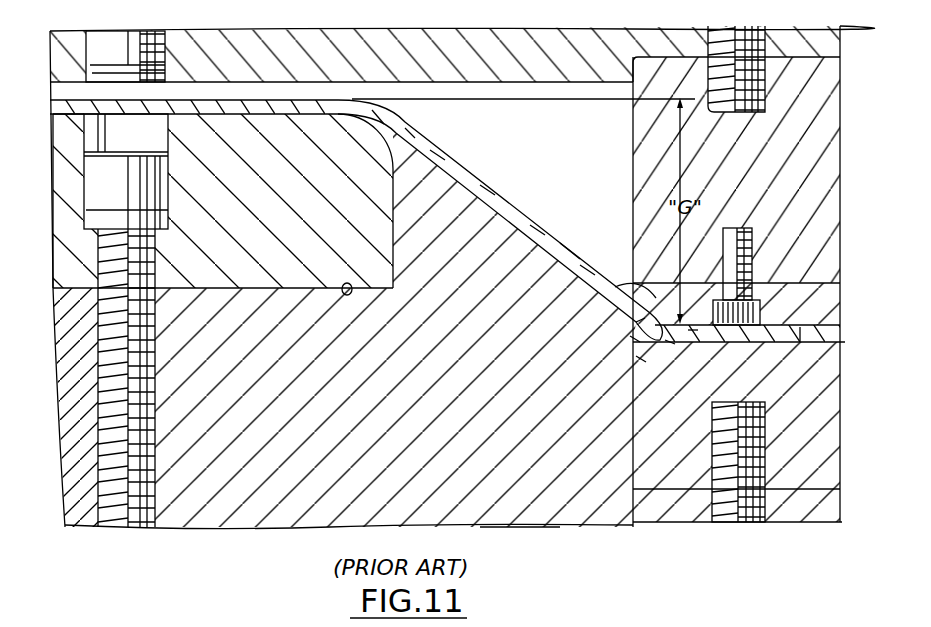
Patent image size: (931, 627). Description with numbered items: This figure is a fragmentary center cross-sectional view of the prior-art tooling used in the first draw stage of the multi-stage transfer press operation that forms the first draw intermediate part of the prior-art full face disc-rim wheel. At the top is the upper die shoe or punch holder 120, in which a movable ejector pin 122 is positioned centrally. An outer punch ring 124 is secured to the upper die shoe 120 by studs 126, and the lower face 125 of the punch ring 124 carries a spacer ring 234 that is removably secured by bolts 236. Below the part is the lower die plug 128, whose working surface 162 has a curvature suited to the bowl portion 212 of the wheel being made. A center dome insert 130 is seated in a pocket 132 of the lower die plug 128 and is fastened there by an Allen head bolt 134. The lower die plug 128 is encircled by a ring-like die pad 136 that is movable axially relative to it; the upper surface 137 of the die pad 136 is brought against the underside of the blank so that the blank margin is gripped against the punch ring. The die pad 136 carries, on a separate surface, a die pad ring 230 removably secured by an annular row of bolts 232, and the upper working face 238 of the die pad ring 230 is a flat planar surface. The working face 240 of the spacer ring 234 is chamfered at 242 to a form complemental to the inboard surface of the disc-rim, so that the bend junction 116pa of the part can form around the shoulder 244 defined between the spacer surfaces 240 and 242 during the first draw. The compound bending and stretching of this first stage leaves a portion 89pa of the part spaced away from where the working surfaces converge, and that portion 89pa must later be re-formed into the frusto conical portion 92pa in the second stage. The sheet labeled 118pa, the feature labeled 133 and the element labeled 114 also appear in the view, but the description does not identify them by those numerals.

The upper die shoe 120 is at (490, 28).
The ejector pin 122 is at (176, 36).
The studs 126 is at (772, 16).
The flexible plate 118pa is at (298, 97).
The pocket 132 is at (395, 233).
The center dome insert 130 is at (283, 294).
The groove 133 is at (348, 296).
The Allen head bolt 134 is at (168, 336).
The die pad ring 230 is at (628, 432).
The bowl portion 212 is at (530, 208).
The frusto conical portion 92pa is at (385, 131).
The portion of intermediate part 89pa is at (418, 138).
The working surface 162 is at (572, 255).
The outer punch ring 124 is at (648, 142).
The bolts 236 is at (755, 230).
The lower face of punch ring 125 is at (770, 284).
The shim plate 114 is at (736, 343).
The working face of spacer ring 240 is at (692, 333).
The spacer ring 234 is at (615, 287).
The chamfer 242 is at (637, 323).
The upper working face of die pad ring 238 is at (632, 339).
The bend junction 116pa is at (638, 362).
The shoulder 244 is at (672, 346).
The upper surface of die pad 137 is at (655, 488).
The die pad ring 136 is at (694, 530).
The bolts 232 is at (766, 416).
The lower die plug 128 is at (526, 532).